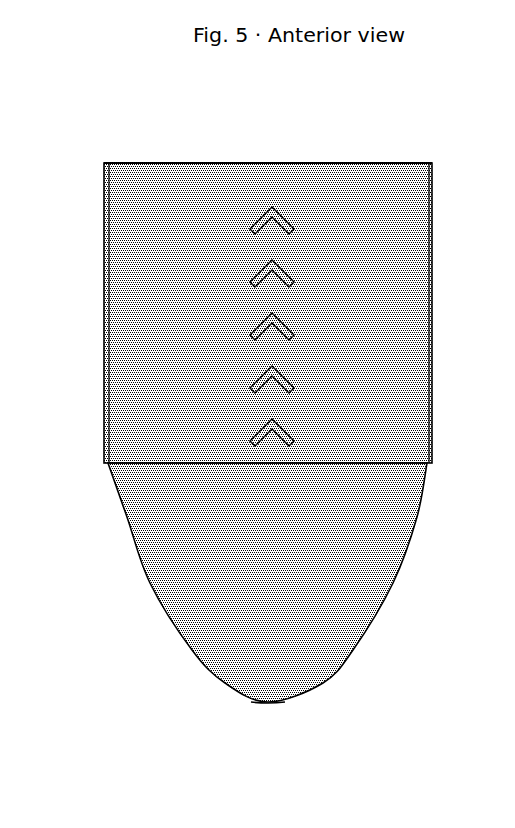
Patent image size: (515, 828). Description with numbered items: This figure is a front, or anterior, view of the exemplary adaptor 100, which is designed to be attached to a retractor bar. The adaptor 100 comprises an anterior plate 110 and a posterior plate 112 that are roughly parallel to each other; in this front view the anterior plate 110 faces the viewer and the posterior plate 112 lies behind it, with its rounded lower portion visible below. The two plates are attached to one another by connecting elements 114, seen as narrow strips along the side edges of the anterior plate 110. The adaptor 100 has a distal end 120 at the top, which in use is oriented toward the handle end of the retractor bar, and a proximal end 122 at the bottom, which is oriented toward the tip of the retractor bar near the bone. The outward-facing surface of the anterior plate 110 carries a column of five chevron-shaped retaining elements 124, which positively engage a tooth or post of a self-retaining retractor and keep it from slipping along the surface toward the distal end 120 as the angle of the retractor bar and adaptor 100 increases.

The adaptor 100 is at (263, 434).
The anterior plate 110 is at (192, 175).
The posterior plate 112 is at (363, 623).
The connecting elements 114 is at (105, 193).
The distal end 120 is at (295, 162).
The proximal end 122 is at (270, 703).
The retaining elements 124 is at (269, 207).